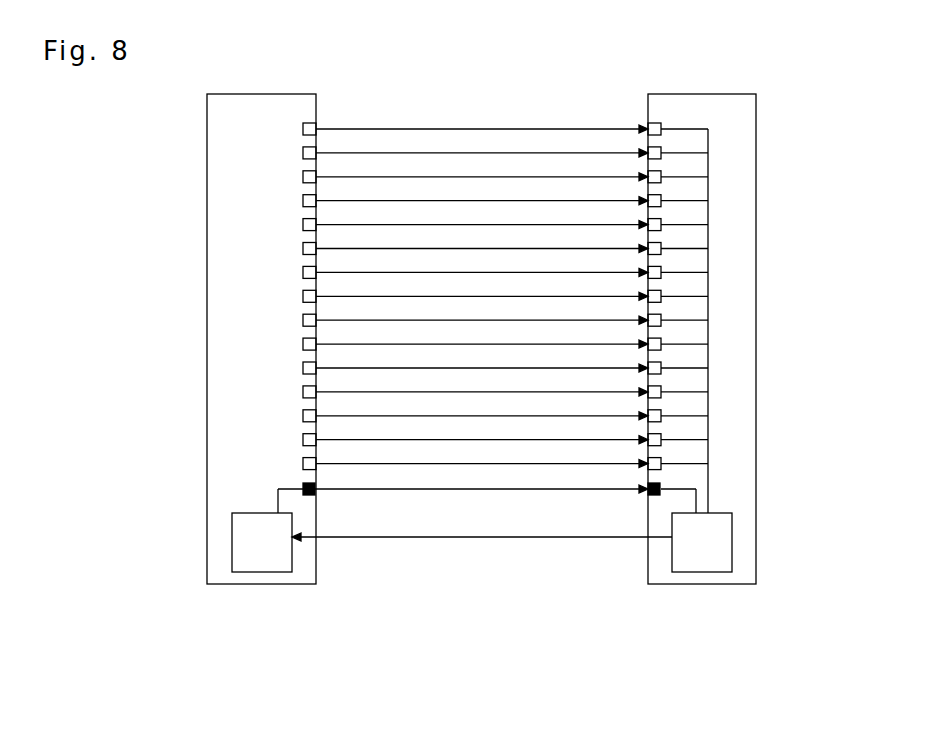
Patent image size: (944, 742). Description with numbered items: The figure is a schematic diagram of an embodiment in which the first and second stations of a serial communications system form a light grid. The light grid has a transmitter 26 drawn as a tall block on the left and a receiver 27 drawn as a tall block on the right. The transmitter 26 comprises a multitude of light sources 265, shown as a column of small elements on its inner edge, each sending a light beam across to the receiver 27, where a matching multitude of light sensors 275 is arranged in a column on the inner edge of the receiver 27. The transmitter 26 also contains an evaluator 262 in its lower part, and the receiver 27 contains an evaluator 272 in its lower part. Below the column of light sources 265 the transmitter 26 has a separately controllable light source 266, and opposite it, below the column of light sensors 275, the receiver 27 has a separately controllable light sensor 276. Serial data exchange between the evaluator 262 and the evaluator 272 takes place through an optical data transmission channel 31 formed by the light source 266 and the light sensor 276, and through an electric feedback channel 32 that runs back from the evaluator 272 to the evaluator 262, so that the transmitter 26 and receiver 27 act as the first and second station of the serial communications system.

The transmitter 26 is at (207, 190).
The receiver 27 is at (756, 190).
The light sources 265 is at (291, 117).
The light sensors 275 is at (718, 117).
The evaluator 262 is at (253, 572).
The evaluator 272 is at (707, 572).
The separately controllable light source 266 is at (309, 495).
The separately controllable light sensor 276 is at (652, 495).
The control signal line 31 is at (492, 489).
The electric feedback channel 32 is at (550, 537).